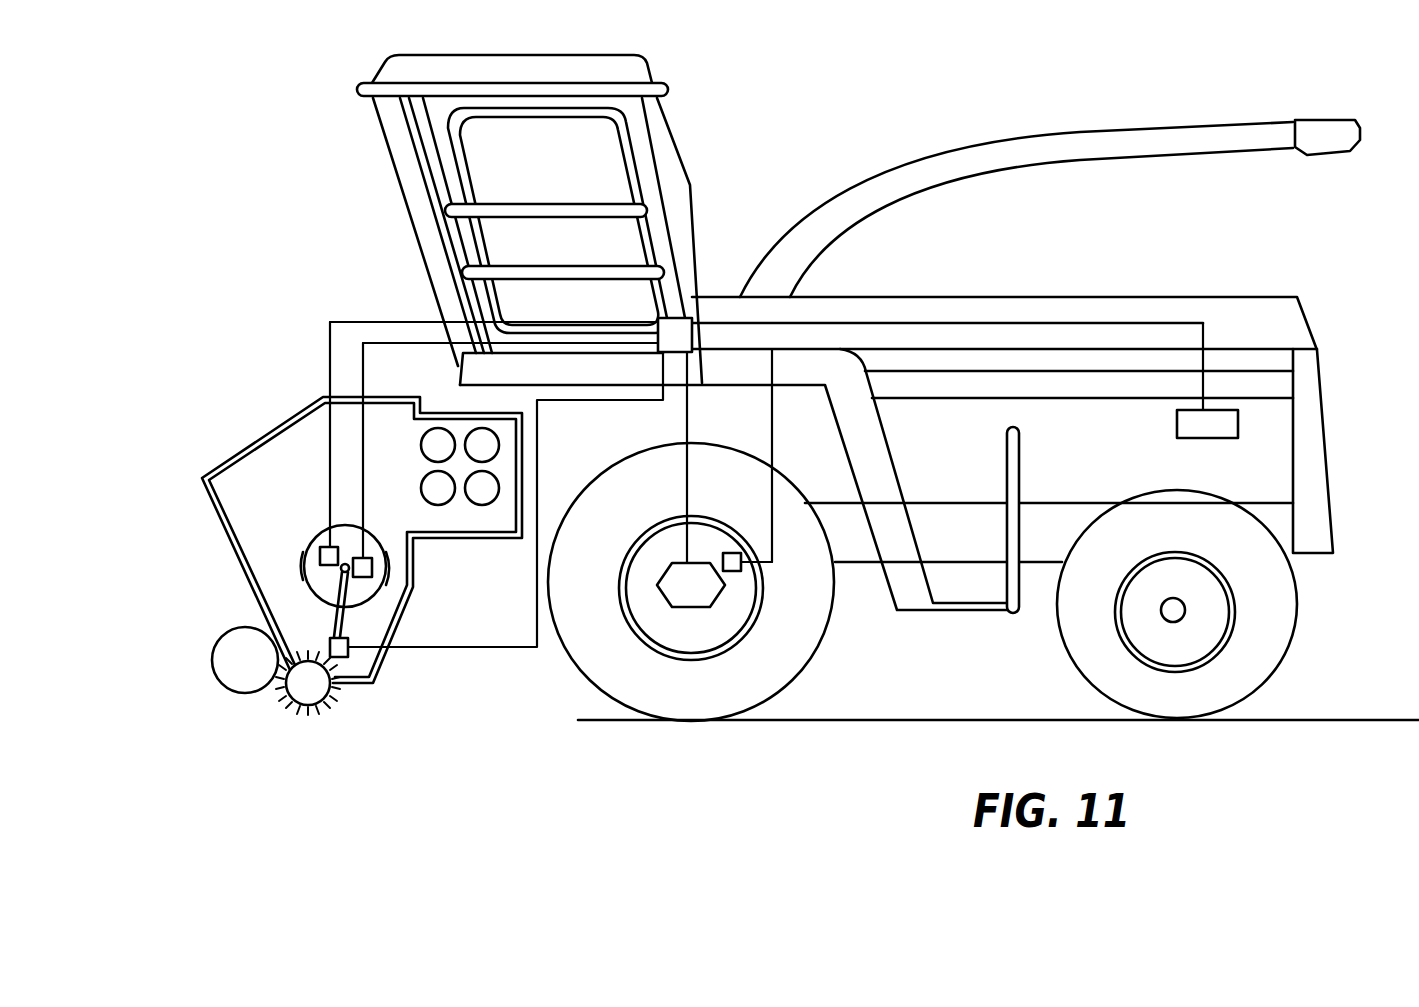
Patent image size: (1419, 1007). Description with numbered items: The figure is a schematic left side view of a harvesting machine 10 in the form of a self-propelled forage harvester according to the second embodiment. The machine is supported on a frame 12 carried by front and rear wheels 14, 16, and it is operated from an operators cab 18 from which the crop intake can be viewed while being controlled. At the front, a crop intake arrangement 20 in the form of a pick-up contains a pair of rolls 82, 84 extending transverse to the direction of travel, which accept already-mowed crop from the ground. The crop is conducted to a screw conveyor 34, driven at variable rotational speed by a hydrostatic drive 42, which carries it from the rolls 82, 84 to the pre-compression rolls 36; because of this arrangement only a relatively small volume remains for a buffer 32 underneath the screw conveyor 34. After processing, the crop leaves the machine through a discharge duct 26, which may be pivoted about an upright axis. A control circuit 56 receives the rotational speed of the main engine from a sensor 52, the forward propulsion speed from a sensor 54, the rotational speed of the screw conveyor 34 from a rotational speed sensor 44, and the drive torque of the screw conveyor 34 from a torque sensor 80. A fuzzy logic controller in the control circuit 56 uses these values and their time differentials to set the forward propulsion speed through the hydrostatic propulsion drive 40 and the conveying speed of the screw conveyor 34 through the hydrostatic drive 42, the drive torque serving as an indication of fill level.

The harvesting machine 10 is at (1150, 247).
The frame 12 is at (1043, 553).
The front wheels 14 is at (787, 682).
The rear wheels 16 is at (1295, 647).
The operators cab 18 is at (407, 200).
The crop intake arrangement 20 is at (258, 434).
The discharge duct 26 is at (933, 190).
The buffer 32 is at (286, 506).
The screw conveyor 34 is at (368, 598).
The pre-compression rolls 36 is at (443, 505).
The hydrostatic propulsion drive 40 is at (688, 607).
The hydrostatic drive 42 is at (328, 645).
The rotational speed sensor 44 is at (318, 557).
The sensor 52 is at (1238, 428).
The sensor 54 is at (735, 572).
The control circuit 56 is at (690, 302).
The torque sensor 80 is at (373, 566).
The roll 82 is at (312, 693).
The roll 84 is at (227, 663).